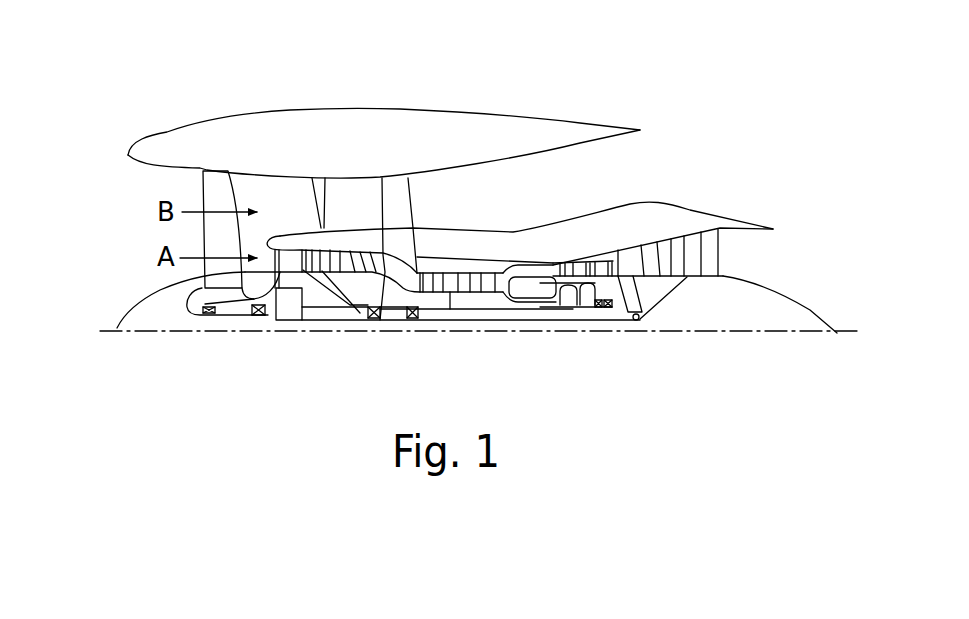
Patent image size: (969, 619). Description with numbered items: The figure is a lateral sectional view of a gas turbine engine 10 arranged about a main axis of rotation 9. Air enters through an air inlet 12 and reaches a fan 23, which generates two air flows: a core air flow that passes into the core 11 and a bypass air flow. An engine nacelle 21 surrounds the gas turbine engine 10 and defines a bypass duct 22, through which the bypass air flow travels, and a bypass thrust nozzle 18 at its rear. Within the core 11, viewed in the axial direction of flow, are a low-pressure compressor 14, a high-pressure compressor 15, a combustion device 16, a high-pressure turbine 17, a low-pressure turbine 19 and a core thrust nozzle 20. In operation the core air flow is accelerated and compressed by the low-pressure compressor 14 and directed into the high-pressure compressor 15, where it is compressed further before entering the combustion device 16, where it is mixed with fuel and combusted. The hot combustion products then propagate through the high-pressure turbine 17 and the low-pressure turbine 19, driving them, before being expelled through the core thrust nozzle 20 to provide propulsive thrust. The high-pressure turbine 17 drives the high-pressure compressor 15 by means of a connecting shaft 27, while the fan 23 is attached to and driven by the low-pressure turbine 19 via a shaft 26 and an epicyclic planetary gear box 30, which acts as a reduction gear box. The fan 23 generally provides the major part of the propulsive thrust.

The main axis of rotation 9 is at (742, 335).
The gas turbine engine 10 is at (181, 124).
The core 11 is at (542, 250).
The air inlet 12 is at (127, 184).
The low-pressure compressor 14 is at (343, 257).
The high-pressure compressor 15 is at (470, 277).
The combustion device 16 is at (528, 283).
The high-pressure turbine 17 is at (583, 267).
The bypass thrust nozzle 18 is at (734, 127).
The low-pressure turbine 19 is at (697, 265).
The core thrust nozzle 20 is at (782, 263).
The engine nacelle 21 is at (395, 123).
The bypass duct 22 is at (618, 167).
The fan 23 is at (207, 245).
The shaft 26 is at (435, 320).
The connecting shaft 27 is at (493, 313).
The epicyclic planetary gear box 30 is at (288, 313).